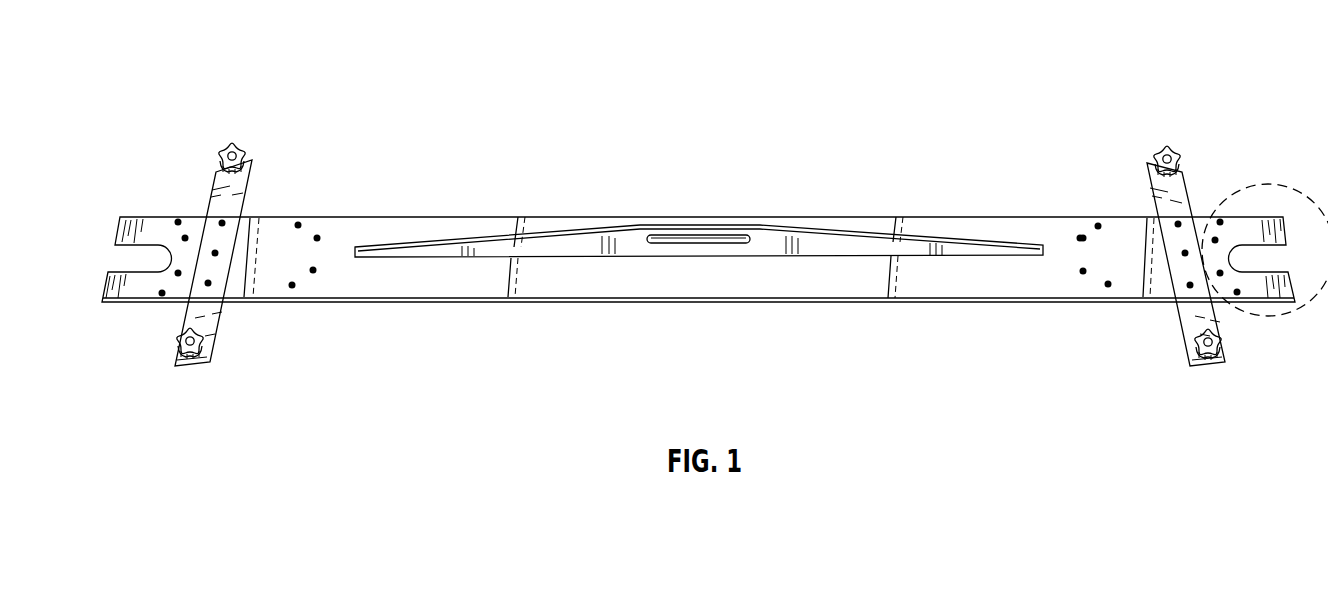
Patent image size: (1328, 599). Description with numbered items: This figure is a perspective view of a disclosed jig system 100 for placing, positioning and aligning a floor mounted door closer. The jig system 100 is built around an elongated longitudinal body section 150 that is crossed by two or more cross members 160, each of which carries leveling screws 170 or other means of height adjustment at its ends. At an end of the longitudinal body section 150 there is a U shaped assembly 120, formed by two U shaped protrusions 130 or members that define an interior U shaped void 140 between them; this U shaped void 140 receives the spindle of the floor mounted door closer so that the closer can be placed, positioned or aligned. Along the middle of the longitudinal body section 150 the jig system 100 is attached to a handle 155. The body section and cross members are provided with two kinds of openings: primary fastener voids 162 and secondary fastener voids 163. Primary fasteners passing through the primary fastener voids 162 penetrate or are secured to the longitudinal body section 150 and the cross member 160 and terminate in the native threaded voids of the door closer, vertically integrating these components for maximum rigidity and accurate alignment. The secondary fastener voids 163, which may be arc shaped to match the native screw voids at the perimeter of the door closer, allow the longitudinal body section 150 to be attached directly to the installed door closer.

The jig system 100 is at (238, 61).
The U shaped assembly 120 is at (1268, 184).
The U shaped protrusions 130 is at (197, 225).
The U shaped void 140 is at (116, 259).
The longitudinal body section 150 is at (320, 227).
The handle 155 is at (773, 227).
The cross members 160 is at (1157, 203).
The primary fastener voids 162 is at (208, 283).
The secondary fastener voids 163 is at (162, 293).
The leveling screws 170 is at (1192, 349).